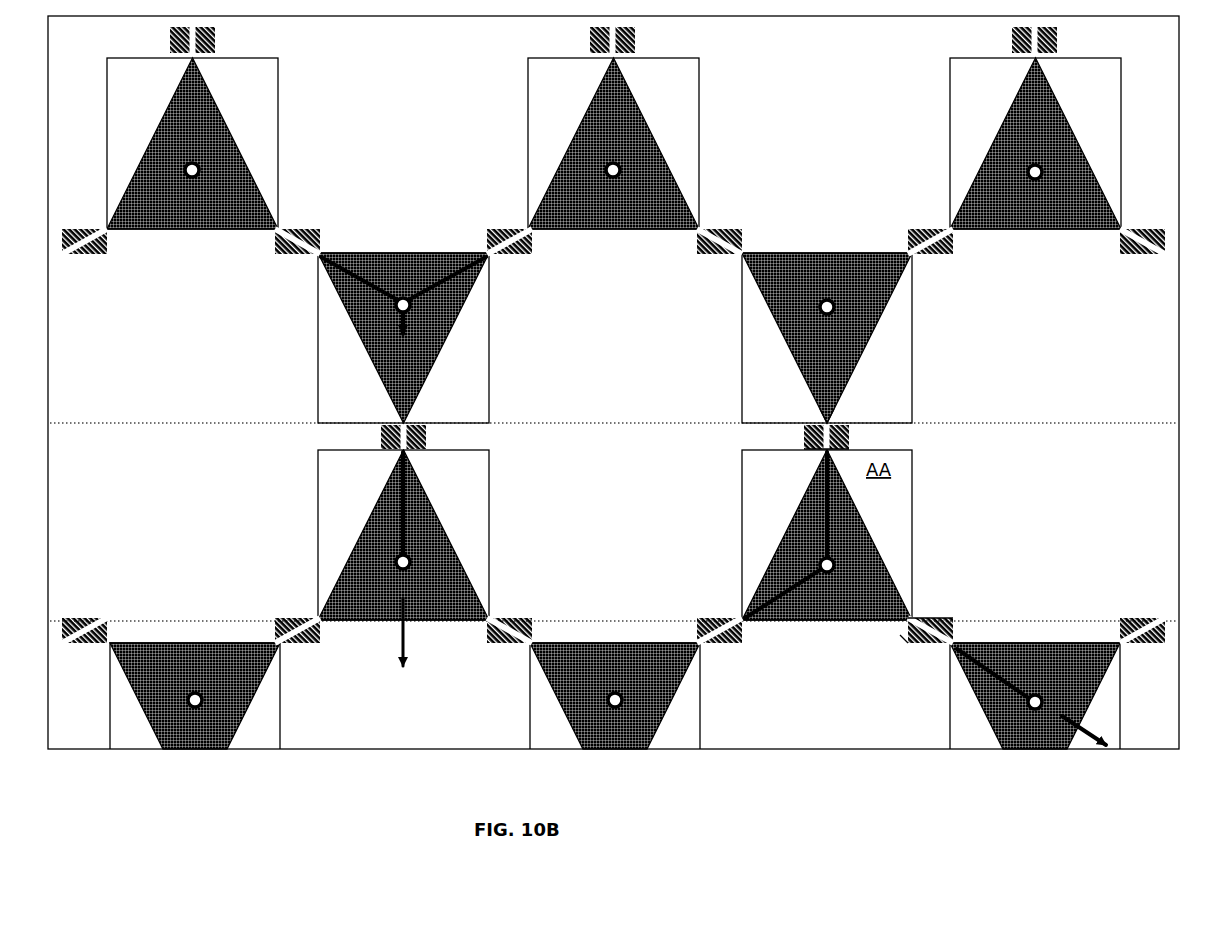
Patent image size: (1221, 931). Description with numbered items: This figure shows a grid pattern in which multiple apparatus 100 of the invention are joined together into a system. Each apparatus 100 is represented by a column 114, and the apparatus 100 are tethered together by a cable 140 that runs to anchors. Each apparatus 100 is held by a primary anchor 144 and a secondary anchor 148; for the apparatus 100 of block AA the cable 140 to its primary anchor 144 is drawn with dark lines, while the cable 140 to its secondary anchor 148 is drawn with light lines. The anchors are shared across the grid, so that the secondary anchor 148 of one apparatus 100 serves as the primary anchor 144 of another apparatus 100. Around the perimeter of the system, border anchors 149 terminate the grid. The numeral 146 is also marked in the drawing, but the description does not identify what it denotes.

The apparatus 100 is at (800, 492).
The column 114 is at (816, 305).
The cable 140 is at (834, 354).
The primary anchor 144 is at (848, 433).
The connector face 146 is at (826, 443).
The secondary anchor 148 is at (836, 418).
The border anchor 149 is at (586, 37).